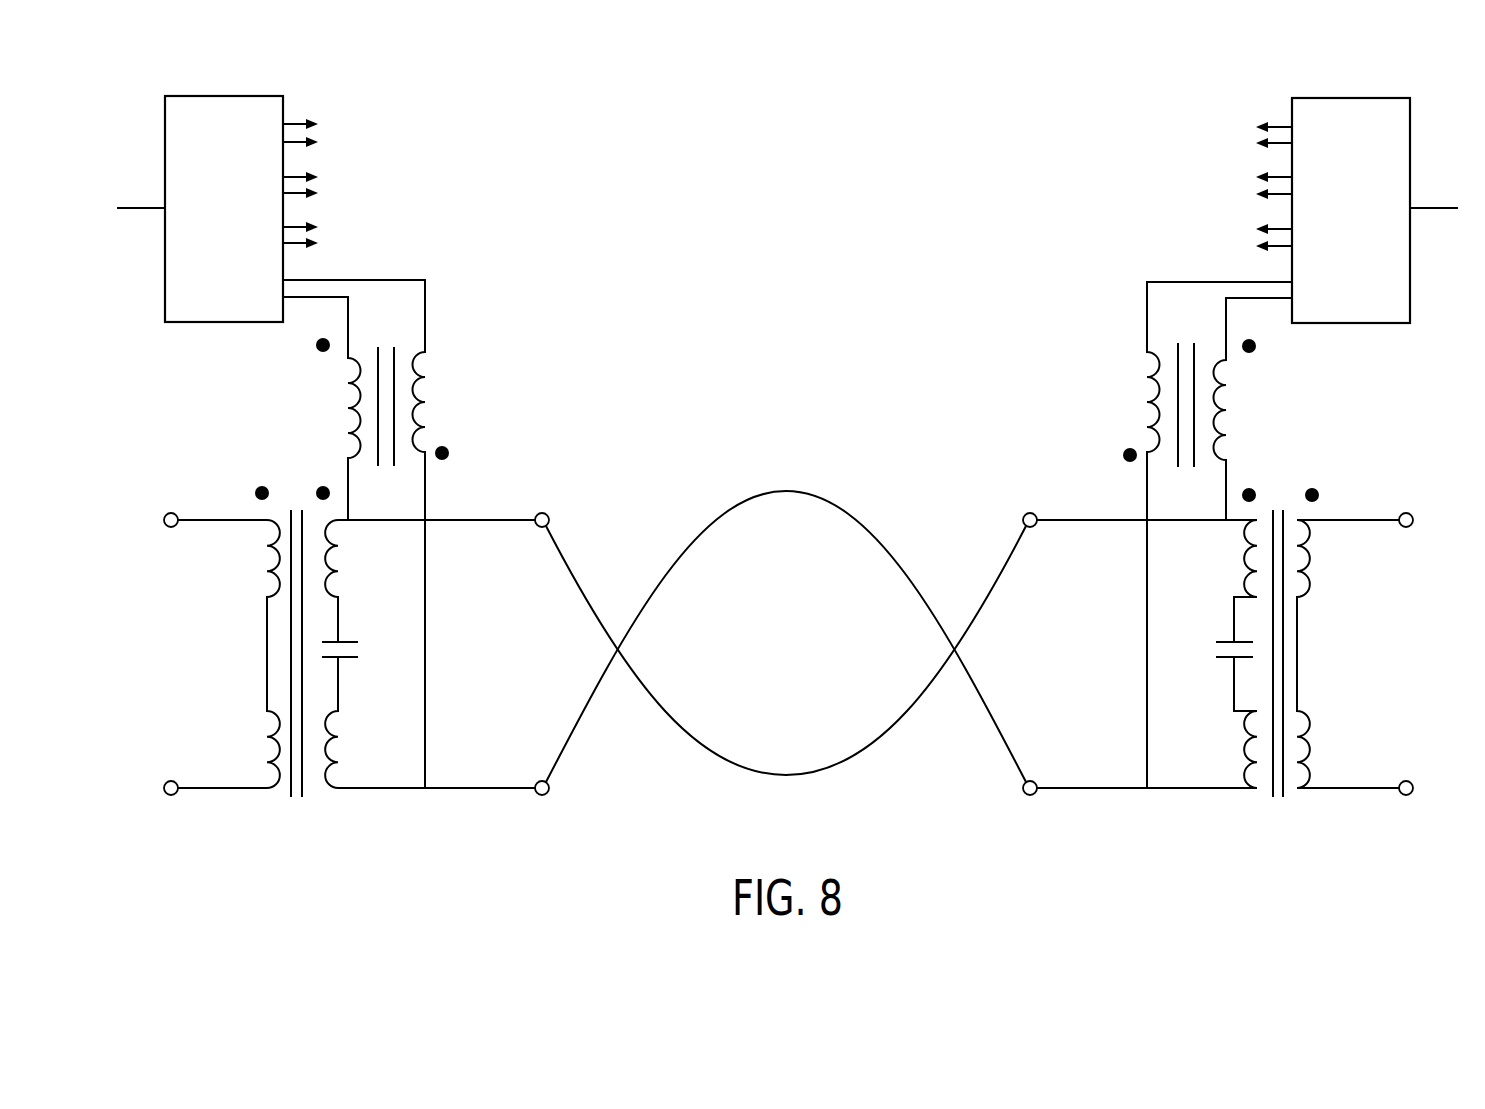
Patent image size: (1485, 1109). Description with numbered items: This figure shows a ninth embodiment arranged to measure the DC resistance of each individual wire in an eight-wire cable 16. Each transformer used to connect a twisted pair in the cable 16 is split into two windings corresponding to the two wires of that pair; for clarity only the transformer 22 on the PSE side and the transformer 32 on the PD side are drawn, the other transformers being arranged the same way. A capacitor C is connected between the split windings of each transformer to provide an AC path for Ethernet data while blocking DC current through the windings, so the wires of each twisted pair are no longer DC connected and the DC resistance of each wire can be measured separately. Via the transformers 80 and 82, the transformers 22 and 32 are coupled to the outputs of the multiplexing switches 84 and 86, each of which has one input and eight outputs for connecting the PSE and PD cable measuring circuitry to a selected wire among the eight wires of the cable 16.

The multiplexing switch 84 is at (165, 143).
The multiplexing switch 86 is at (1410, 143).
The transformer 80 is at (425, 310).
The transformer 82 is at (1147, 308).
The transformer 22 is at (313, 812).
The transformer 32 is at (1261, 811).
The cable 16 is at (797, 390).